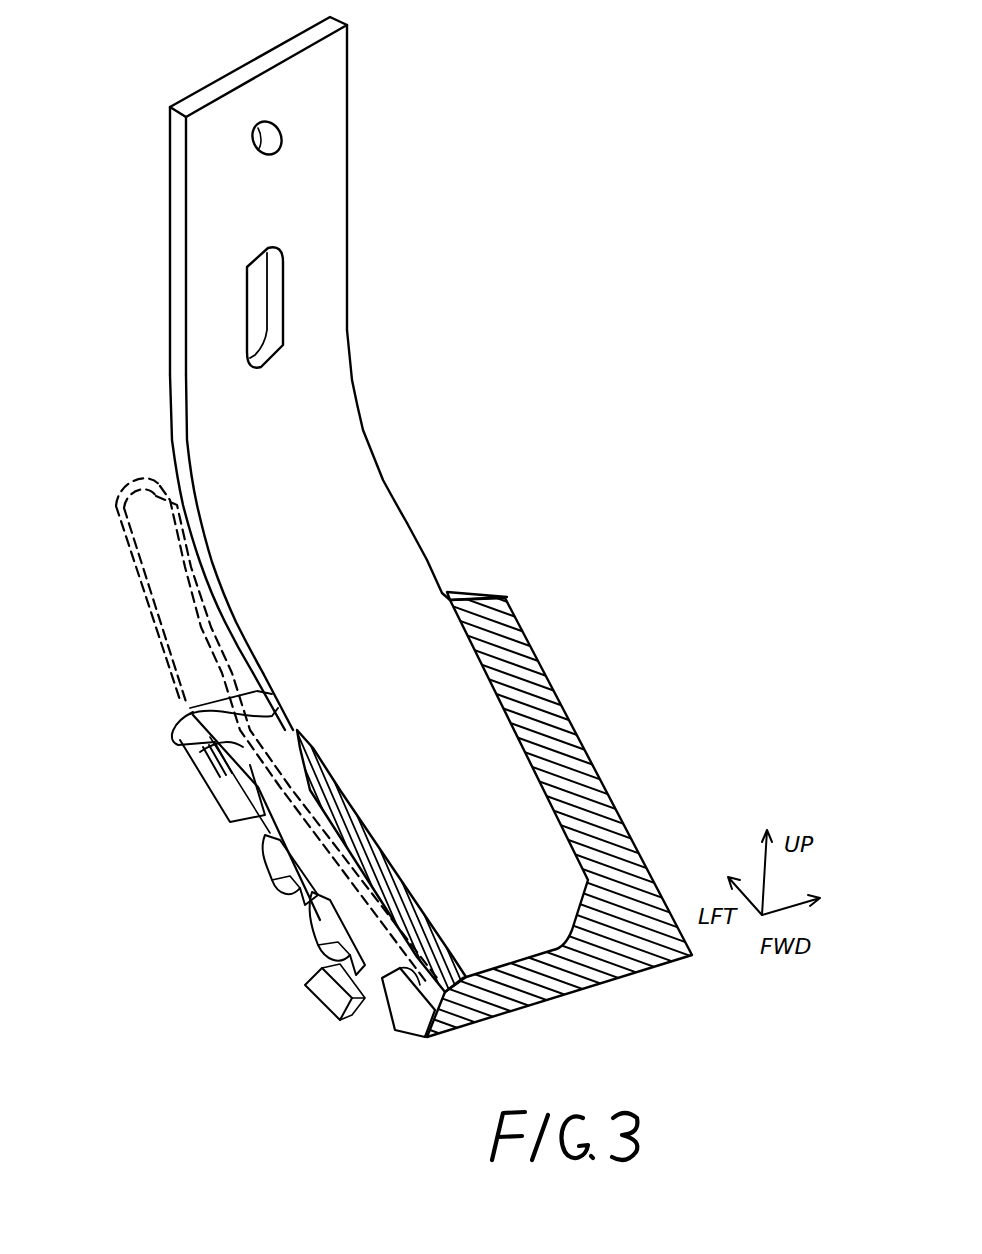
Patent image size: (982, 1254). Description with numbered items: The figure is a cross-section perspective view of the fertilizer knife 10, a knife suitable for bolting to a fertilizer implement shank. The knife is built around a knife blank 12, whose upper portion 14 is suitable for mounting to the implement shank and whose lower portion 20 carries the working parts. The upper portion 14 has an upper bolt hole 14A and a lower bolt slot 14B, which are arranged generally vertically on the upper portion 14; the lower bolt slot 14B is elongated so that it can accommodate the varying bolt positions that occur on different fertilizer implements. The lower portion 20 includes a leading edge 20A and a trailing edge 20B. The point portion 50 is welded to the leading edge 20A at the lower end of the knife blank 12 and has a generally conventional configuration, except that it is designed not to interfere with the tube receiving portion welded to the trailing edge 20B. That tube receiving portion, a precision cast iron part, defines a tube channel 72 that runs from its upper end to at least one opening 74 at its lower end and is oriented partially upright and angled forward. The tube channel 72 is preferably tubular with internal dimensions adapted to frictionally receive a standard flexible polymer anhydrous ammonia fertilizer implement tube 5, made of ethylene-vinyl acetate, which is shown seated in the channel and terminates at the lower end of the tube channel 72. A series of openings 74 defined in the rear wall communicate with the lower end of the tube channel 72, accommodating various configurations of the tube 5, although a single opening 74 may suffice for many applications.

The fertilizer knife 10 is at (458, 155).
The knife blank 12 is at (300, 486).
The upper portion 14 is at (303, 209).
The upper bolt hole 14A is at (278, 135).
The lower bolt slot 14B is at (283, 316).
The lower portion 20 is at (468, 812).
The leading edge 20A is at (443, 590).
The trailing edge 20B is at (190, 706).
The fertilizer implement tube 5 is at (170, 640).
The point portion 50 is at (580, 742).
The tube channel 72 is at (196, 748).
The opening 74 is at (265, 847).